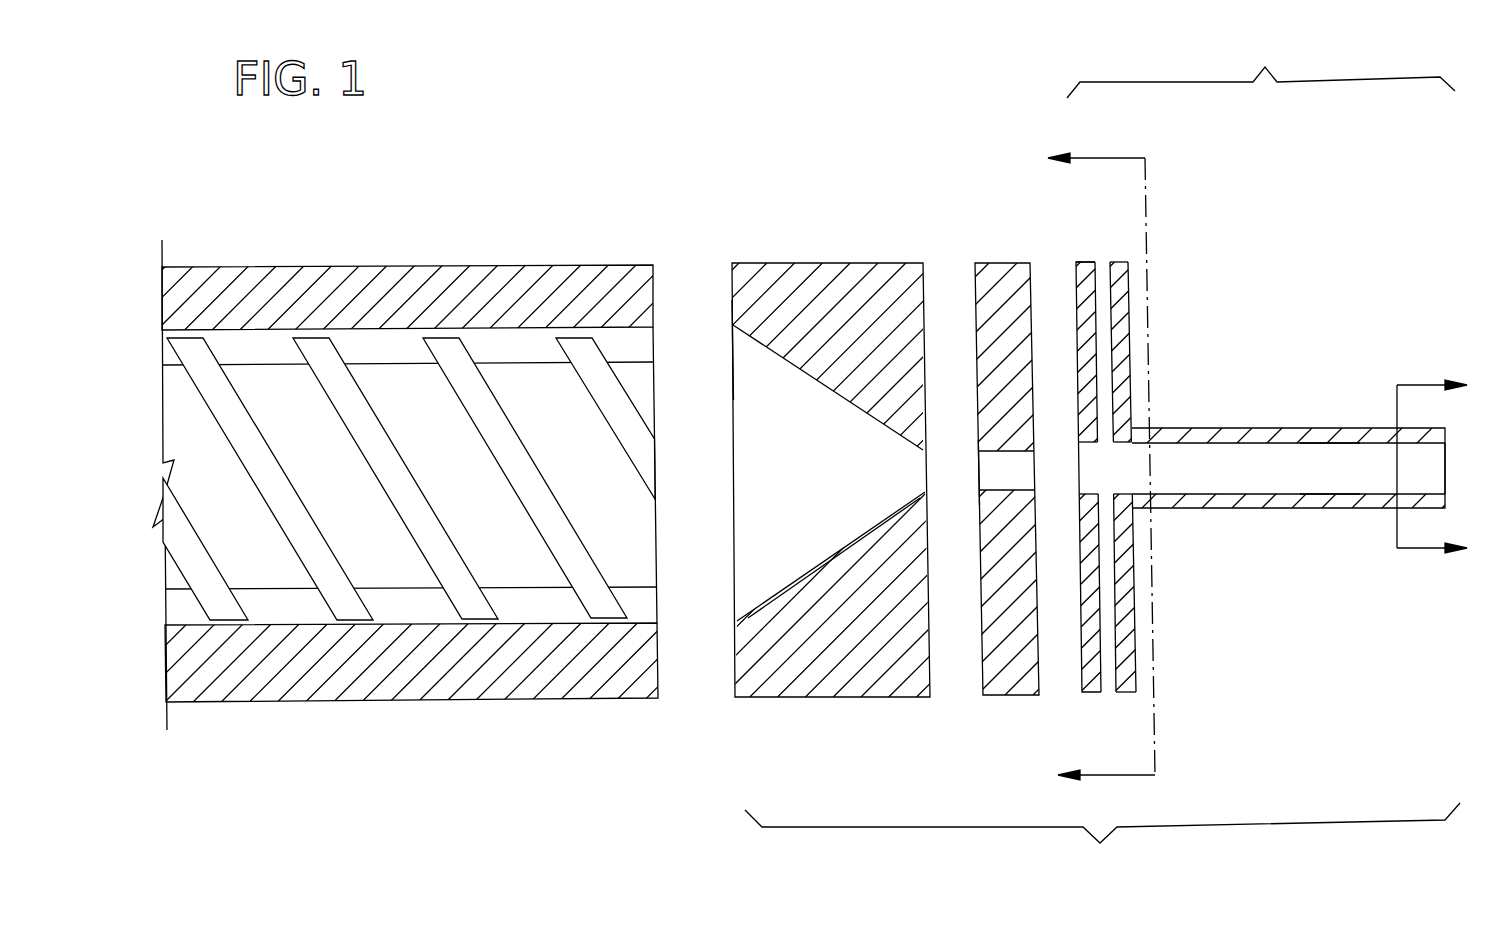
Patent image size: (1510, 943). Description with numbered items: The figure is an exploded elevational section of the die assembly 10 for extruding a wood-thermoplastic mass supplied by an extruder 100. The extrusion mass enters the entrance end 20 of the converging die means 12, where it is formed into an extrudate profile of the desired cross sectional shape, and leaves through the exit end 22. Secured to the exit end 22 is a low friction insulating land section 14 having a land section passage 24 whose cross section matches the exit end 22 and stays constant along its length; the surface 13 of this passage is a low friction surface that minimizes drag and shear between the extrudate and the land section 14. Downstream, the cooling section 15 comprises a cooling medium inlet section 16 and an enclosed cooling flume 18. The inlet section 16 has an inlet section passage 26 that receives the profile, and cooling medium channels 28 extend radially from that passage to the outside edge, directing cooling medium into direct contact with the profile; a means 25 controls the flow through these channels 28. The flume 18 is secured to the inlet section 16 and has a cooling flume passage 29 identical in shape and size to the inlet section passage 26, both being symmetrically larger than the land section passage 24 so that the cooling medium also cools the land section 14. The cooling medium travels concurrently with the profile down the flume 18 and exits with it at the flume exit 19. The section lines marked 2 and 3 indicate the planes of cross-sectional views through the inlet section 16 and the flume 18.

The extruder 100 is at (557, 266).
The die assembly 10 is at (893, 454).
The converging die means 12 is at (813, 457).
The entrance end 20 is at (732, 350).
The exit end 22 is at (928, 473).
The low friction insulating land section 14 is at (1011, 455).
The surface of the land section passage 13 is at (1018, 490).
The land section passage 24 is at (983, 473).
The cooling section 15 is at (1081, 387).
The cooling medium inlet section 16 is at (1081, 458).
The means for controlling cooling medium flow 25 is at (1077, 262).
The cooling medium channels 28 is at (1105, 260).
The inlet section passage 26 is at (1111, 474).
The enclosed cooling flume 18 is at (1281, 460).
The flume exit 19 is at (1435, 473).
The cooling flume passage 29 is at (1327, 478).
The section line 2- 2 is at (1090, 467).
The section line 3- 3 is at (1444, 468).